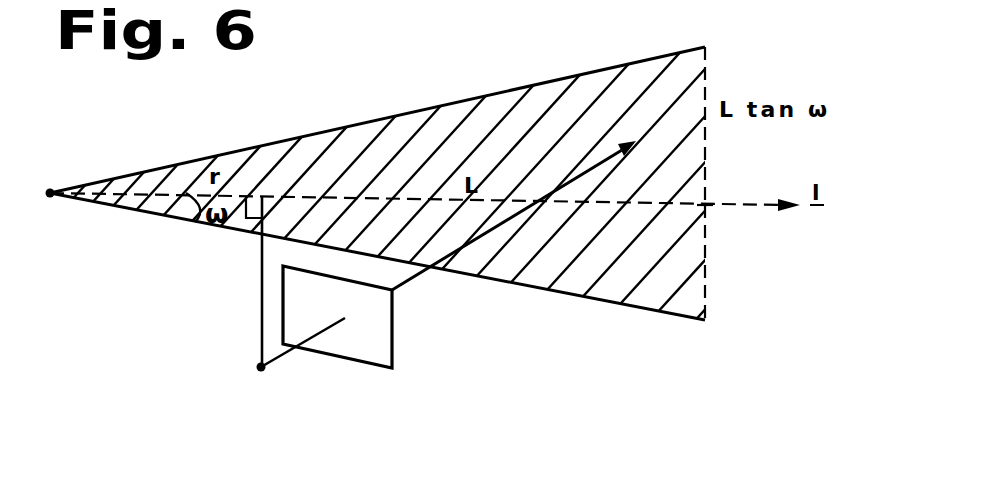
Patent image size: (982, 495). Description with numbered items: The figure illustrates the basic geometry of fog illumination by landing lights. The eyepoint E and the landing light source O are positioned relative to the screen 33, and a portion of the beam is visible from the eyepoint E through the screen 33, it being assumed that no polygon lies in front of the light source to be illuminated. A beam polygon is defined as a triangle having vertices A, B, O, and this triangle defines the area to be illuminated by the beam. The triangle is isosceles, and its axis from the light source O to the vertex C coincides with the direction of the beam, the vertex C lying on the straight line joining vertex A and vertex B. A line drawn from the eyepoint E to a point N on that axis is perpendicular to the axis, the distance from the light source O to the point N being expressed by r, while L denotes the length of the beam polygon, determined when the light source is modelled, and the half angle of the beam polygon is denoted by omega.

The screen 33 is at (393, 333).
The landing light source O is at (36, 195).
The vertex A is at (718, 115).
The vertex B is at (704, 282).
The vertex C is at (711, 190).
The point N is at (263, 266).
The eyepoint E is at (265, 388).